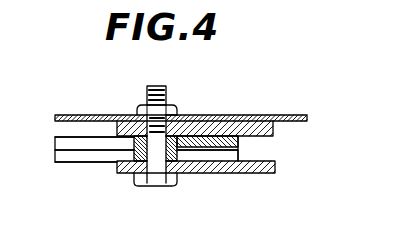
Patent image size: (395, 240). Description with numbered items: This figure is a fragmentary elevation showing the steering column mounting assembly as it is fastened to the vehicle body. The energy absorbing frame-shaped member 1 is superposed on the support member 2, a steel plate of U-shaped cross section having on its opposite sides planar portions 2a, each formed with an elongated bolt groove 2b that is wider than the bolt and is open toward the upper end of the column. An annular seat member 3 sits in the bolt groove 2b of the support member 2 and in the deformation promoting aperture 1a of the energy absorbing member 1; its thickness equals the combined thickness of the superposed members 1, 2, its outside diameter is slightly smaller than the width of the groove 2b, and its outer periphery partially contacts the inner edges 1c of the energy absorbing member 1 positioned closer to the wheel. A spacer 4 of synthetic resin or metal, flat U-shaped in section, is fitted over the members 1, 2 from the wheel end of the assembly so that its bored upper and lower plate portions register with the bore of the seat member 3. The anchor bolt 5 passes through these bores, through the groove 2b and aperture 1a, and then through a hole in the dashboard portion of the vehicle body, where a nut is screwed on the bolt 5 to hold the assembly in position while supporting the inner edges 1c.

The energy absorbing frame-shaped member 1 is at (240, 140).
The deformation promoting apertures 1a is at (67, 140).
The inner edges 1c is at (179, 118).
The support member 2 is at (62, 164).
The planar portions 2a is at (241, 158).
The elongated bolt groove 2b is at (97, 163).
The annular seat member 3 is at (140, 115).
The spacer 4 is at (273, 130).
The anchor bolt 5 is at (137, 187).